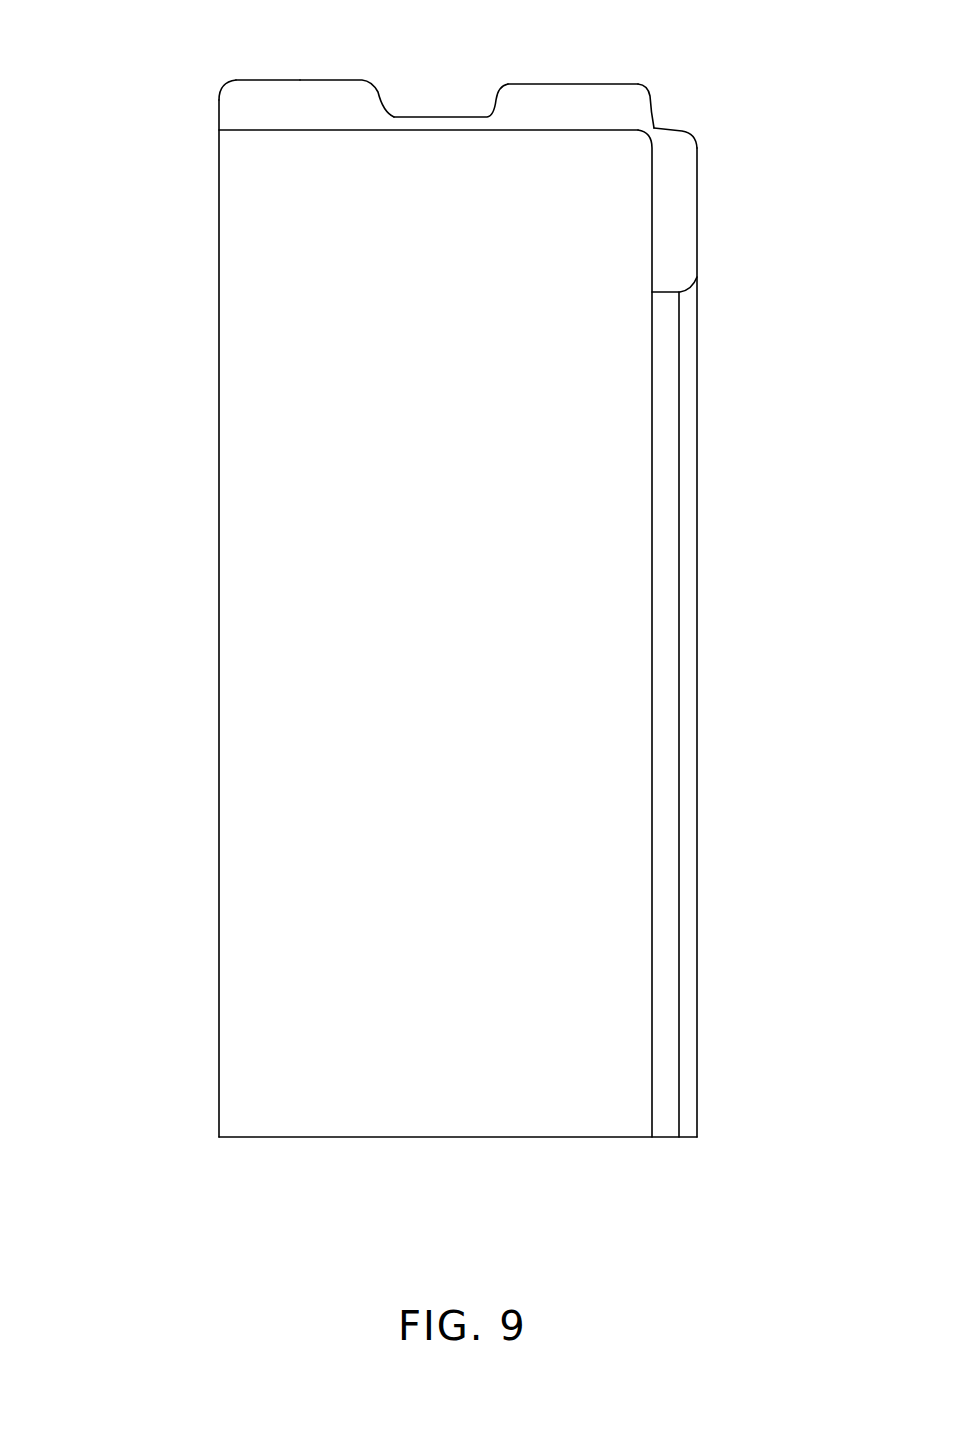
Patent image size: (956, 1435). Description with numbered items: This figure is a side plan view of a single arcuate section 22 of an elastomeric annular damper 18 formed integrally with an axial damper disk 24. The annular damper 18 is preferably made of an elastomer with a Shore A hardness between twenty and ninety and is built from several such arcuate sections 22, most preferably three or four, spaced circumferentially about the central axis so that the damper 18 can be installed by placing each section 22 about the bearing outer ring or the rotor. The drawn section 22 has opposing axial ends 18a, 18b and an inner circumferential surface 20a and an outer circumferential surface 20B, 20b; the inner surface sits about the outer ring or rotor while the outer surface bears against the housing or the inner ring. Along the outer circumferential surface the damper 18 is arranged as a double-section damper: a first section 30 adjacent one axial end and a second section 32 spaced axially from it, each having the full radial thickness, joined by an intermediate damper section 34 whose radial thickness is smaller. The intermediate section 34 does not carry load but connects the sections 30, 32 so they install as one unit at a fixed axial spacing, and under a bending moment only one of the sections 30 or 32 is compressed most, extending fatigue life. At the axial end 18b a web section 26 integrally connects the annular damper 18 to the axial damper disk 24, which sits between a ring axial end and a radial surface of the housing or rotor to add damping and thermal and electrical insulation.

The elastomeric annular damper 18 is at (150, 354).
The axial end 18a is at (218, 99).
The axial end 18b is at (655, 109).
The inner circumferential surface 20a is at (247, 112).
The outer circumferential surface 20B is at (340, 80).
The outer circumferential surface 20b is at (480, 1138).
The arcuate section 22 is at (242, 465).
The axial damper disk 24 is at (716, 231).
The web section 26 is at (655, 130).
The first section 30 is at (291, 88).
The second section 32 is at (554, 92).
The intermediate damper section 34 is at (426, 117).